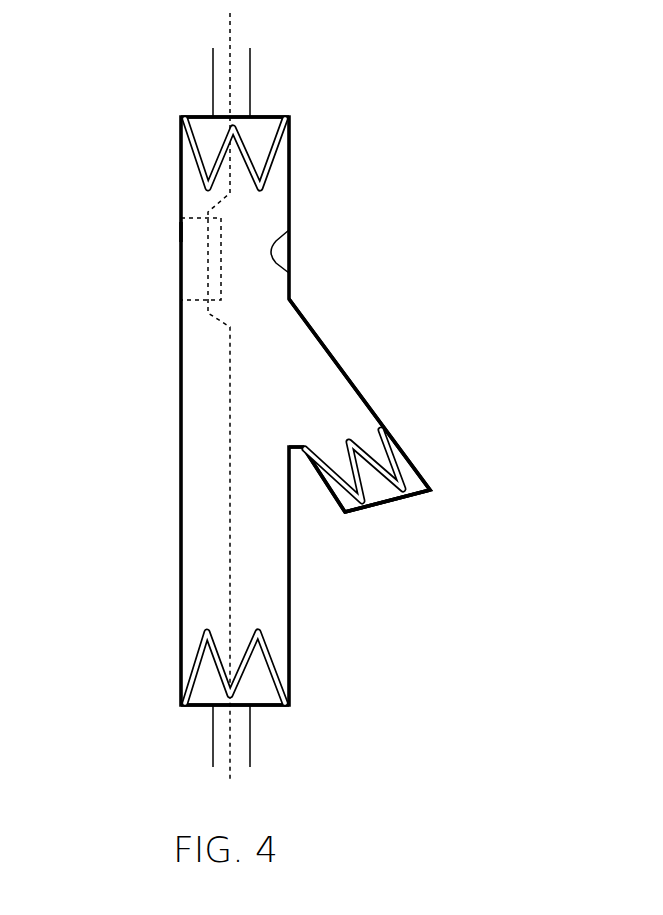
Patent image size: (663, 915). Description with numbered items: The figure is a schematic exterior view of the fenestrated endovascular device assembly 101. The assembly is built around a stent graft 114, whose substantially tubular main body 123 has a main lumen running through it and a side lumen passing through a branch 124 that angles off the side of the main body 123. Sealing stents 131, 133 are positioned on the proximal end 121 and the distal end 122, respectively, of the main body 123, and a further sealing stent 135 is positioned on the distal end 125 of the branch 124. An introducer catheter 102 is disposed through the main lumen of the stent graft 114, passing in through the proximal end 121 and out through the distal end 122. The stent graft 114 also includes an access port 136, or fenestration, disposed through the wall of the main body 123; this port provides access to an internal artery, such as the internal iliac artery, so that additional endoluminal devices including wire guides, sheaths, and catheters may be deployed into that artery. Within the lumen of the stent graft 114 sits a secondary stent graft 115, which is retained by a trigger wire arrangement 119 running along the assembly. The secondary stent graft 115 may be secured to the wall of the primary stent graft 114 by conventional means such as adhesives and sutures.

The fenestrated endovascular device assembly 101 is at (272, 396).
The introducer catheter 102 is at (250, 72).
The stent graft 114 is at (181, 410).
The secondary stent graft 115 is at (193, 242).
The trigger wire arrangement 119 is at (230, 370).
The proximal end 121 is at (265, 117).
The distal end 122 is at (265, 708).
The main body 123 is at (181, 232).
The branch 124 is at (372, 435).
The distal end of the branch 125 is at (387, 502).
The sealing stent 131 is at (270, 168).
The sealing stent 133 is at (273, 658).
The sealing stent 135 is at (393, 458).
The access port 136 is at (289, 243).